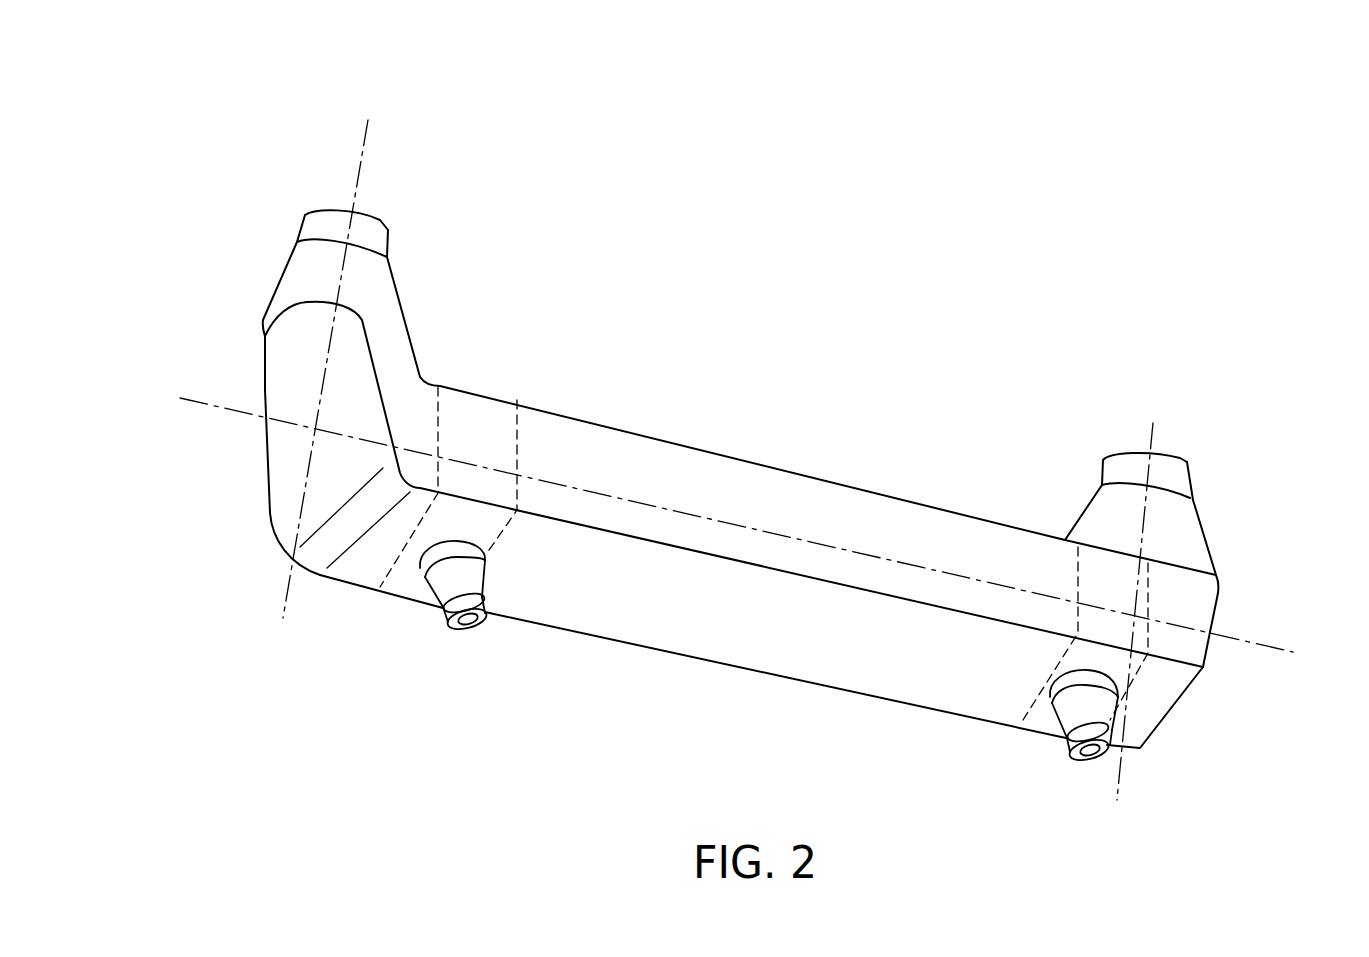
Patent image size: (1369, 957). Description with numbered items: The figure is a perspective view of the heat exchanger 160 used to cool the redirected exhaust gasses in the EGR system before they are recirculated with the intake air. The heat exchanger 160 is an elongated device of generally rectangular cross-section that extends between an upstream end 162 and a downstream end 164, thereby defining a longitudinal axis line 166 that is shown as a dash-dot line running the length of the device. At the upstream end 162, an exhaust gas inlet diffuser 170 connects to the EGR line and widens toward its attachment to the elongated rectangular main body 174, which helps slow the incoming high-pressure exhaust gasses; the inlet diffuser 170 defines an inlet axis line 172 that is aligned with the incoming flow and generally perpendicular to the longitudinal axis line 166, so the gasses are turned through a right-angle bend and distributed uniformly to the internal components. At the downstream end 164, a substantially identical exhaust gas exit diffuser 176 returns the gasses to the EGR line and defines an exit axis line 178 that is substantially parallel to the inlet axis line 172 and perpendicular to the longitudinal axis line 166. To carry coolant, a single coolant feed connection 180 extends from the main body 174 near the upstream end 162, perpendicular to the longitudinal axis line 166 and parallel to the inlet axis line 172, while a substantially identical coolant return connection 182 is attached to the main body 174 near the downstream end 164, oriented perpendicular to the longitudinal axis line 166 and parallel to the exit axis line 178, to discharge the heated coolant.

The heat exchanger 160 is at (738, 272).
The upstream end 162 is at (300, 438).
The downstream end 164 is at (1213, 653).
The longitudinal axis line 166 is at (208, 403).
The exhaust gas inlet diffuser 170 is at (407, 312).
The inlet axis line 172 is at (365, 150).
The main body 174 is at (612, 428).
The exhaust gas exit diffuser 176 is at (1100, 518).
The exit axis line 178 is at (1163, 430).
The coolant feed connection 180 is at (453, 606).
The coolant return connection 182 is at (1078, 737).